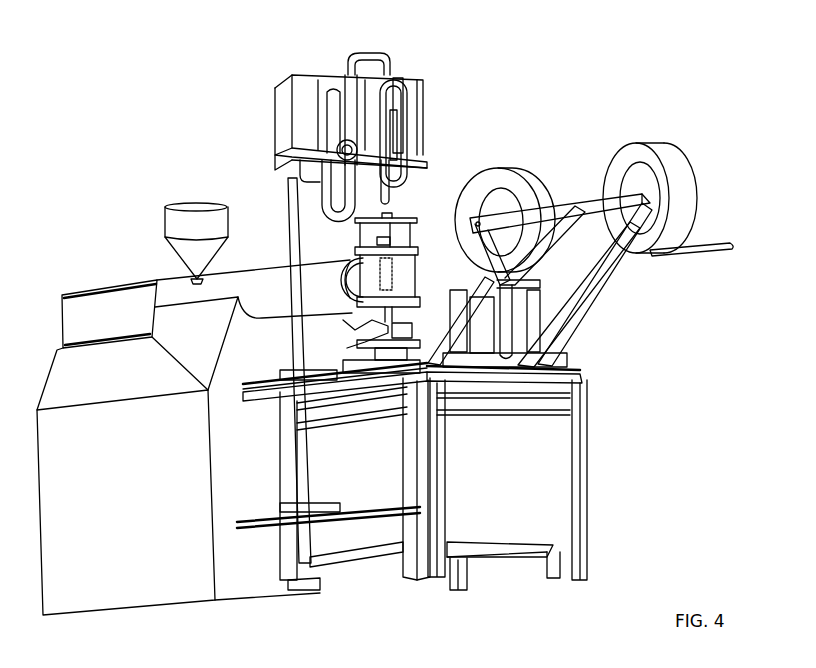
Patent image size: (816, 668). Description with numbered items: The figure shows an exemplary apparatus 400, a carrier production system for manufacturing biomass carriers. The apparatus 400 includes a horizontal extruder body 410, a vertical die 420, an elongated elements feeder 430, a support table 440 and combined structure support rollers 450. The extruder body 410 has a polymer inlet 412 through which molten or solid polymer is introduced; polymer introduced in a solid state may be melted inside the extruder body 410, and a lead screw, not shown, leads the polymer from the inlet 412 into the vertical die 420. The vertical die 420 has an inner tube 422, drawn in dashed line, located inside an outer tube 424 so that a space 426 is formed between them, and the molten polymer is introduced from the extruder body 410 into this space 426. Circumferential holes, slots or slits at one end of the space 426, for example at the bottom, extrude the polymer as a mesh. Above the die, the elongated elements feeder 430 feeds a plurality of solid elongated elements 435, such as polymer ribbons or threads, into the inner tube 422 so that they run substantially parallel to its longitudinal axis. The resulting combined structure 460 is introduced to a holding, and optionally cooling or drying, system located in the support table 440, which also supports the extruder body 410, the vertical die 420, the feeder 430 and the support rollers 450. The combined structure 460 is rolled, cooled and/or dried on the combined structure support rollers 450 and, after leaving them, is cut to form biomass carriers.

The apparatus 400 is at (115, 110).
The horizontal extruder body 410 is at (185, 293).
The polymer inlet 412 is at (185, 220).
The vertical die 420 is at (405, 270).
The inner tube 422 is at (388, 220).
The outer tube 424 is at (365, 270).
The space 426 is at (365, 278).
The elongated elements feeder 430 is at (417, 92).
The elongated elements 435 is at (390, 53).
The support table 440 is at (563, 457).
The combined structure support rollers 450 is at (667, 157).
The combined structure 460 is at (388, 315).